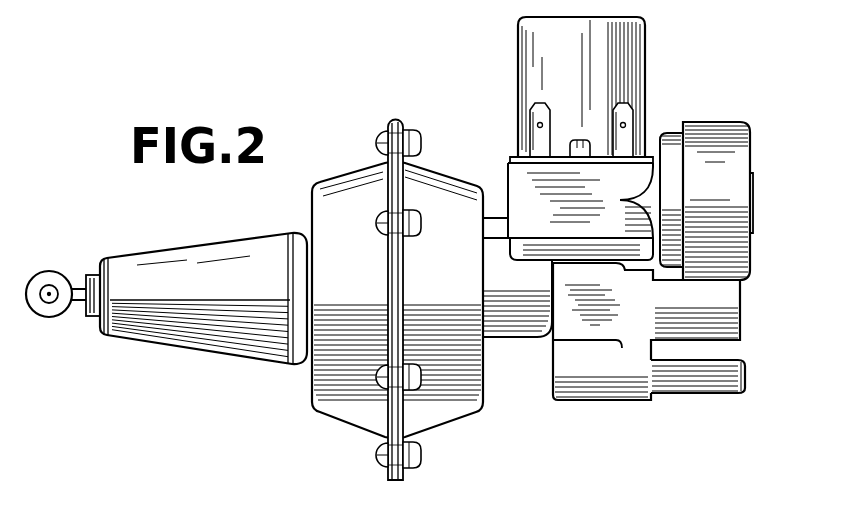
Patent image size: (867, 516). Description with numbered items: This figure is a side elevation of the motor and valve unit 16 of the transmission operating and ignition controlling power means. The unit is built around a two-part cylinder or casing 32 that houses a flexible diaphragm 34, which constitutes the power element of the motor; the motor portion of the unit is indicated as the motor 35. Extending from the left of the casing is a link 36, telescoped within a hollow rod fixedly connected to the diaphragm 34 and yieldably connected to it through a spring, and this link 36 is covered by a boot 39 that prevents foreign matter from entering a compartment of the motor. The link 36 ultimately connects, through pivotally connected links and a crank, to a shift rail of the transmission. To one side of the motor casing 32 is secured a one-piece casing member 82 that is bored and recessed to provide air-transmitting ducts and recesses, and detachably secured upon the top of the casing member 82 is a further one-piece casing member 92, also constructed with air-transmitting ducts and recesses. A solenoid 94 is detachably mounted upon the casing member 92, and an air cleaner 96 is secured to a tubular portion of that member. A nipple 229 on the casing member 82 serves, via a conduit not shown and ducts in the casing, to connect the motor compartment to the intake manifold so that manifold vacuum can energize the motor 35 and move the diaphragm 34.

The motor and valve unit 16 is at (512, 143).
The two-part cylinder or casing 32 is at (343, 430).
The flexible diaphragm 34 is at (396, 480).
The motor portion 35 is at (484, 405).
The link 36 is at (78, 310).
The boot 39 is at (208, 342).
The casing member 82 is at (727, 303).
The casing member 92 is at (512, 180).
The solenoid 94 is at (627, 72).
The air cleaner 96 is at (715, 140).
The nipple 229 is at (713, 383).